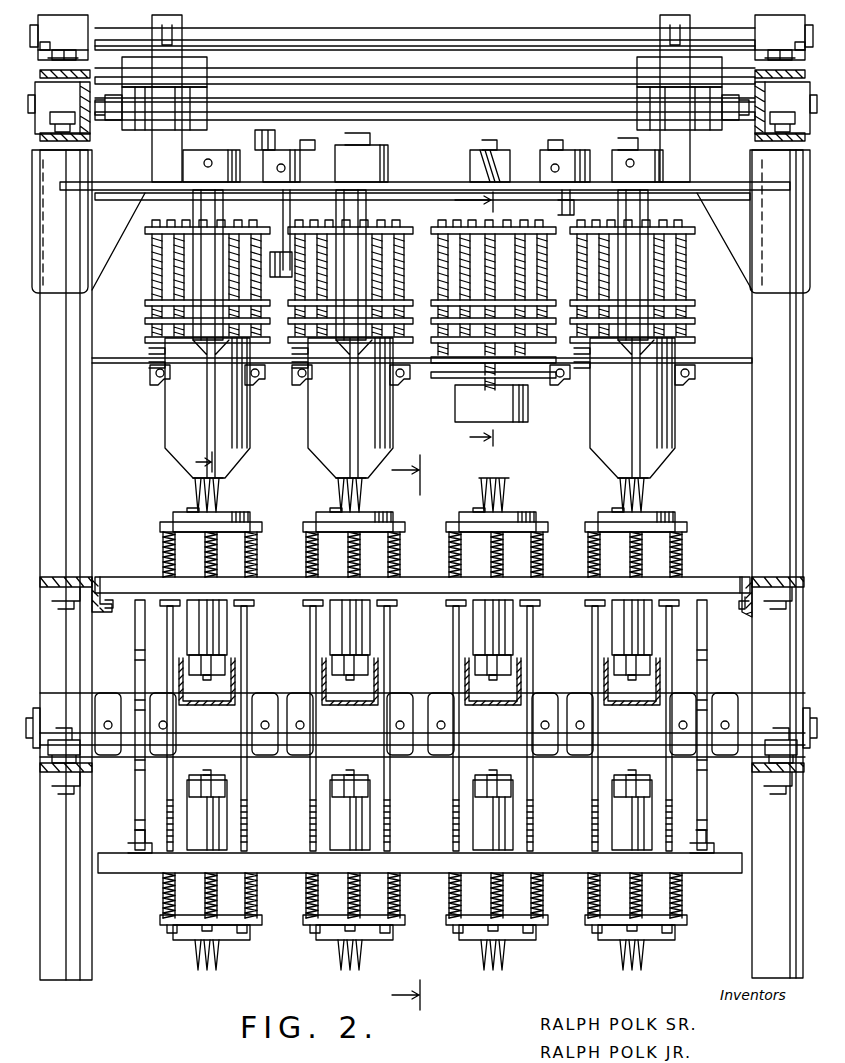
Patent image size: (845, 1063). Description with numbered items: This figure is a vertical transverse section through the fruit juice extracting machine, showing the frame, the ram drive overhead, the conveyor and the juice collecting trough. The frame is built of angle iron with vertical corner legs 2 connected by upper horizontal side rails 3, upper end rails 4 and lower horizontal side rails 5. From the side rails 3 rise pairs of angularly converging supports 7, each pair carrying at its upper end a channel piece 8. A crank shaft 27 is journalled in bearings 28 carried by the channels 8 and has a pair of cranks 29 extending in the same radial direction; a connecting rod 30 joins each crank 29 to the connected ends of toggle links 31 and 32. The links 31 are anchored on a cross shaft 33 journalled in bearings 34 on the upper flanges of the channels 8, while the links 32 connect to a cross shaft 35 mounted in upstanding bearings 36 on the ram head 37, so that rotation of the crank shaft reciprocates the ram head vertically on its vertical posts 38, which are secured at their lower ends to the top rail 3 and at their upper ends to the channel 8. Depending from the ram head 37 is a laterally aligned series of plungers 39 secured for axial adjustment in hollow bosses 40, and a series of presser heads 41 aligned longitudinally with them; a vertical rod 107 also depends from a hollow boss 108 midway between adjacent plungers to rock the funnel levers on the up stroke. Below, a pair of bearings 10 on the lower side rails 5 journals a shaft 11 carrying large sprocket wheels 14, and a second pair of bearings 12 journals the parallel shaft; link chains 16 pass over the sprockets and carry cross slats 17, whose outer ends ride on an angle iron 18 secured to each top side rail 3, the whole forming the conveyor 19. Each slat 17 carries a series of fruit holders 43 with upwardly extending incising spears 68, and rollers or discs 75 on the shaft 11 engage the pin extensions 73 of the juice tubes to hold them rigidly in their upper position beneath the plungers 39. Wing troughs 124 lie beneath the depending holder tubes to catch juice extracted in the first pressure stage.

The vertical corner legs 2 is at (75, 968).
The upper horizontal side rails 3 is at (756, 612).
The upper end rails 4 is at (406, 732).
The lower horizontal side rails 5 is at (76, 805).
The angularly converging supports 7 is at (199, 459).
The channel piece 8 is at (80, 45).
The bearings 10 is at (60, 705).
The shaft 11 is at (45, 720).
The bearings 12 is at (465, 319).
The sprocket wheels 14 is at (135, 645).
The link chains 16 is at (120, 612).
The cross slats 17 is at (132, 578).
The angle iron 18 is at (100, 592).
The conveyor 19 is at (696, 546).
The crank shaft 27 is at (288, 118).
The bearings 28 is at (85, 128).
The cranks 29 is at (125, 75).
The connecting rod 30 is at (668, 45).
The toggle links 31 is at (700, 66).
The toggle links 32 is at (650, 80).
The cross shaft 33 is at (470, 30).
The bearings 34 is at (90, 20).
The cross shaft 35 is at (448, 82).
The upstanding bearings 36 is at (150, 165).
The ram head 37 is at (190, 196).
The guide strip 38 is at (75, 445).
The plungers 39 is at (380, 210).
The hollow bosses 40 is at (350, 150).
The presser heads 41 is at (138, 299).
The fruit holders 43 is at (254, 503).
The incising knives or spears 68 is at (222, 488).
The pin extensions 73 is at (256, 604).
The rollers or discs 75 is at (248, 655).
The vertical rod 107 is at (288, 222).
The hollow boss 108 is at (292, 150).
The wing troughs 124 is at (582, 677).